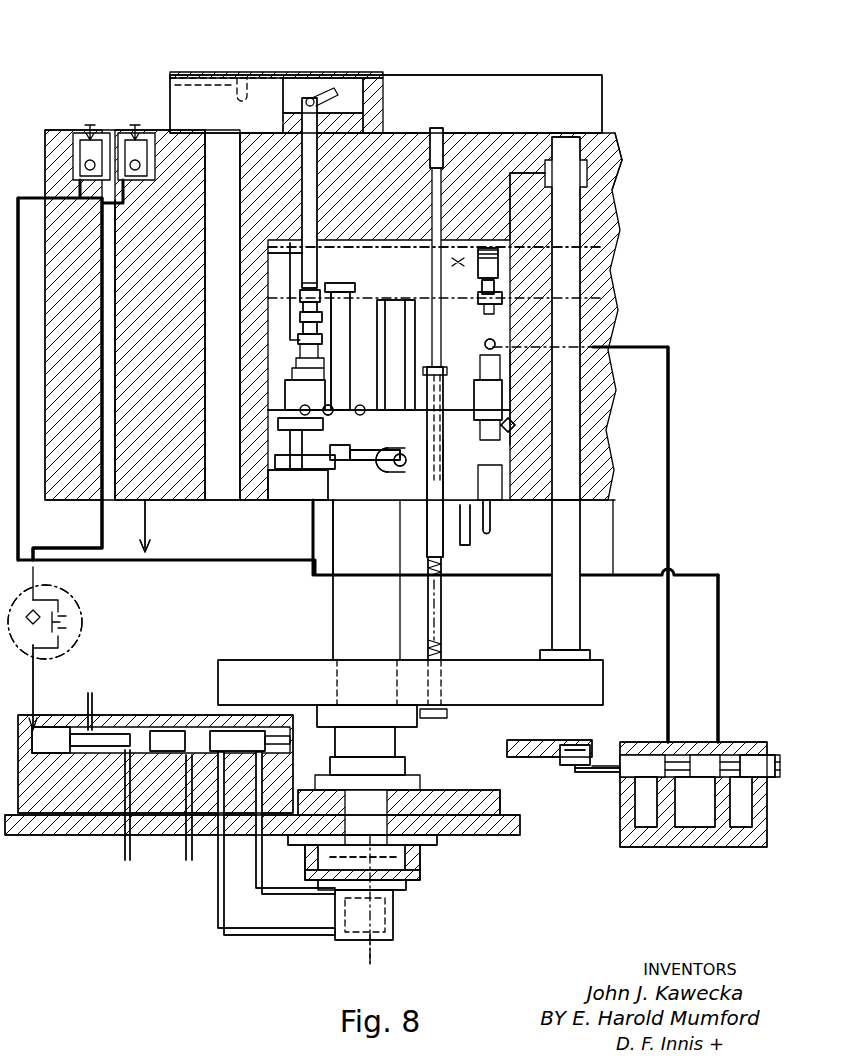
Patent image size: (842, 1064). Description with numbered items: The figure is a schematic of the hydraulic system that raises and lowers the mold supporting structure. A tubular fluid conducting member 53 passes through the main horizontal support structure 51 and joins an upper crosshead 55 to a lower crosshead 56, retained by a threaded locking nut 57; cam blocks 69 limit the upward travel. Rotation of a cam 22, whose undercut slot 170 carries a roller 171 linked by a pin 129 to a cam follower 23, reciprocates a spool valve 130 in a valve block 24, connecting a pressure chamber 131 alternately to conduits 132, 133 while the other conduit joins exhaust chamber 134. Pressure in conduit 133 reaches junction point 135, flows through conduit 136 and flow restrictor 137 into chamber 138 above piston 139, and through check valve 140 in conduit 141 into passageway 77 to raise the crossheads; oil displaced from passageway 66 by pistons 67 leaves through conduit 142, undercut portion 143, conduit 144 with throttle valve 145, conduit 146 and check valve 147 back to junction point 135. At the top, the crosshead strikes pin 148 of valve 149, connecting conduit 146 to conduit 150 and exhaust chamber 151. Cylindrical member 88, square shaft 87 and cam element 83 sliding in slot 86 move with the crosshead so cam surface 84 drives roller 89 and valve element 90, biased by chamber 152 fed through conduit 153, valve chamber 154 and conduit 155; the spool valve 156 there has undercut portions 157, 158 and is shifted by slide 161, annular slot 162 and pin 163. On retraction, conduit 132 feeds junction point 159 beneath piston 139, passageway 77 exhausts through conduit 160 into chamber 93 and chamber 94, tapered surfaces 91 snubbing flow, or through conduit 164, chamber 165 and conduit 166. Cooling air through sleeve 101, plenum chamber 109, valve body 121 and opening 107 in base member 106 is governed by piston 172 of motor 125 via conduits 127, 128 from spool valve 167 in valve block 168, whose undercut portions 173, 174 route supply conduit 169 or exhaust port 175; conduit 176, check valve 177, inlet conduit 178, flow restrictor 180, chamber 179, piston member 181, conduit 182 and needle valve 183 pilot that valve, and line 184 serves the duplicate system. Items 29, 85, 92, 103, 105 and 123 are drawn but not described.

The cam 22 is at (528, 742).
The cam follower 23 is at (576, 772).
The valve block 24 is at (620, 840).
The passage 29 is at (222, 315).
The main horizontal support structure 51 is at (620, 165).
The tubular fluid conducting member 53 is at (333, 612).
The upper crosshead 55 is at (600, 105).
The lower crosshead 56 is at (585, 688).
The threaded locking nut 57 is at (405, 716).
The passageway 66 is at (570, 205).
The piston 67 is at (575, 540).
The cam block 69 is at (590, 655).
The passageway 77 is at (200, 492).
The cam element 83 is at (443, 440).
The cam surface 84 is at (426, 450).
The screw 85 is at (455, 534).
The slot 86 is at (414, 348).
The square shaft 87 is at (432, 165).
The cylindrical member 88 is at (430, 538).
The roller 89 is at (400, 472).
The valve element 90 is at (385, 462).
The tapered surface 91 is at (345, 495).
The block 92 is at (352, 445).
The chamber 93 is at (345, 460).
The chamber 94 is at (320, 495).
The sleeve 101 is at (385, 743).
The flange 103 is at (408, 780).
The plate 105 is at (500, 790).
The base member 106 is at (520, 825).
The opening 107 is at (375, 822).
The plenum chamber 109 is at (415, 872).
The valve body 121 is at (380, 856).
The block 123 is at (365, 882).
The motor 125 is at (395, 925).
The conduit 127 is at (298, 898).
The conduit 128 is at (298, 930).
The pin 129 is at (520, 800).
The spool valve 130 is at (755, 762).
The pressure chamber 131 is at (690, 820).
The conduit 132 is at (668, 622).
The conduit 133 is at (718, 650).
The exhaust chamber 134 is at (740, 815).
The junction point 135 is at (320, 418).
The conduit 136 is at (333, 370).
The flow restrictor 137 is at (458, 255).
The chamber 138 is at (495, 276).
The piston 139 is at (500, 262).
The check valve 140 is at (300, 425).
The conduit 141 is at (280, 460).
The conduit 142 is at (525, 170).
The undercut portion 143 is at (490, 300).
The conduit 144 is at (396, 355).
The throttle valve 145 is at (397, 290).
The conduit 146 is at (389, 399).
The check valve 147 is at (365, 400).
The pin 148 is at (463, 540).
The valve 149 is at (490, 515).
The conduit 150 is at (500, 440).
The exhaust chamber 151 is at (645, 820).
The chamber 152 is at (275, 496).
The conduit 153 is at (285, 393).
The valve chamber 154 is at (298, 362).
The conduit 155 is at (300, 258).
The spool valve 156 is at (310, 275).
The undercut portion 157 is at (303, 344).
The undercut portion 158 is at (303, 310).
The junction point 159 is at (493, 342).
The conduit 160 is at (312, 515).
The slide 161 is at (292, 105).
The annular slot 162 is at (380, 70).
The pin 163 is at (312, 100).
The conduit 164 is at (345, 300).
The chamber 165 is at (300, 292).
The conduit 166 is at (303, 328).
The spool valve 167 is at (168, 735).
The valve block 168 is at (65, 793).
The supply conduit 169 is at (190, 862).
The undercut slot 170 is at (590, 752).
The roller 171 is at (572, 748).
The piston 172 is at (372, 948).
The undercut portion 173 is at (152, 740).
The undercut portion 174 is at (210, 740).
The exhaust port 175 is at (127, 862).
The conduit 176 is at (20, 543).
The check valve 177 is at (92, 165).
The inlet conduit 178 is at (100, 515).
The chamber 179 is at (35, 725).
The flow restrictor 180 is at (66, 620).
The piston member 181 is at (52, 740).
The conduit 182 is at (92, 700).
The needle valve 183 is at (88, 135).
The line 184 is at (145, 540).